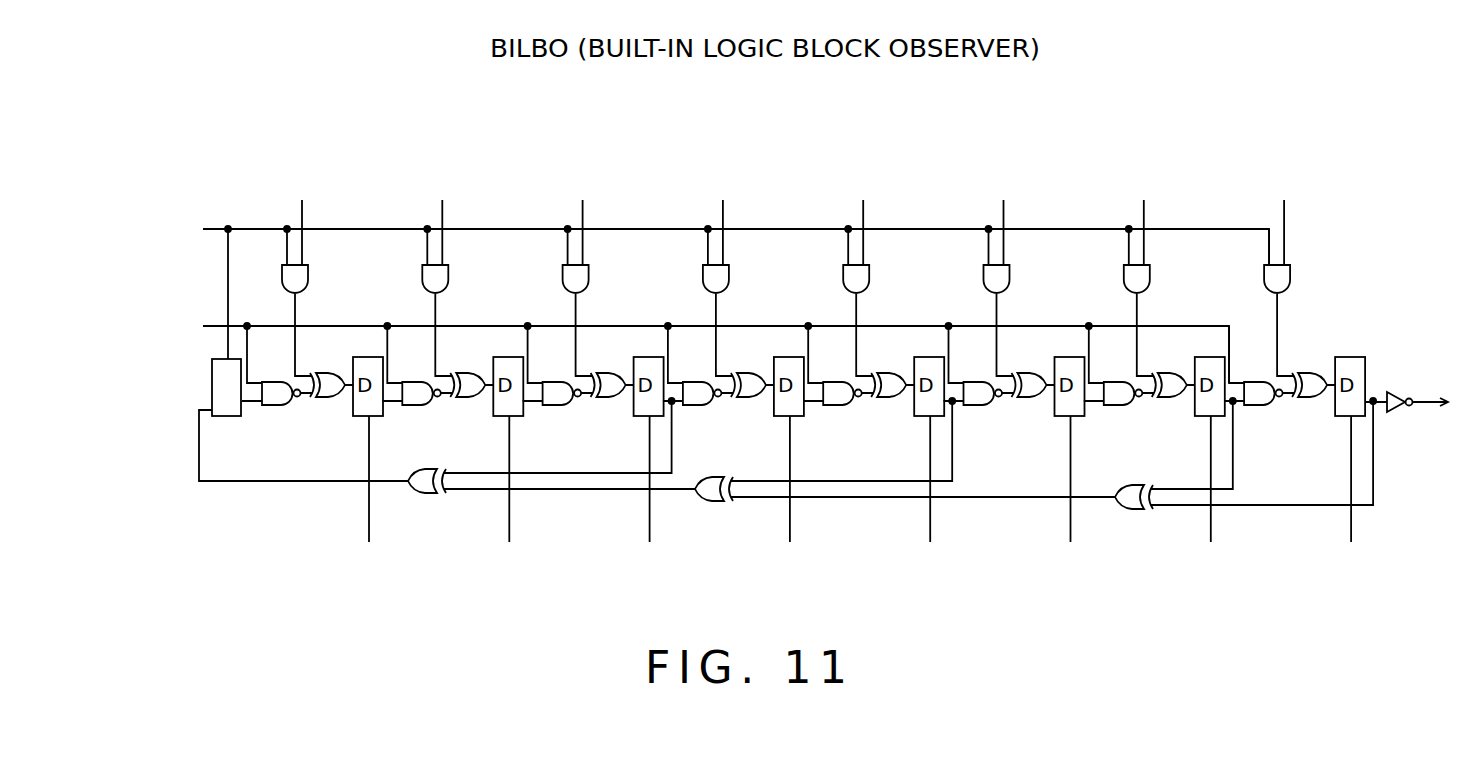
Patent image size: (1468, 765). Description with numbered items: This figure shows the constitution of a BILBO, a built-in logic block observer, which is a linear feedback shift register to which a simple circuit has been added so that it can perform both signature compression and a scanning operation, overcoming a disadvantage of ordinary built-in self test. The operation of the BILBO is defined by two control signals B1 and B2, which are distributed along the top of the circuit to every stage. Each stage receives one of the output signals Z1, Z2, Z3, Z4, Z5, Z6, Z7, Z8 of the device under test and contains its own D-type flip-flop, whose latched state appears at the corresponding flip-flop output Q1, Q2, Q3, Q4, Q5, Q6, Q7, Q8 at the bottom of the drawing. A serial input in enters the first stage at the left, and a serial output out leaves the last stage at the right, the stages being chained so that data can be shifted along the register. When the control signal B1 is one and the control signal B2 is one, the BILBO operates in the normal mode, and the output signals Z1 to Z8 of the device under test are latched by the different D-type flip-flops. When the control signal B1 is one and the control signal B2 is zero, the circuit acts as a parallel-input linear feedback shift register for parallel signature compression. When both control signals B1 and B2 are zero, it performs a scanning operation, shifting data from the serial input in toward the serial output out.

The control signal B1 is at (715, 241).
The control signal B2 is at (695, 348).
The serial input in is at (212, 372).
The serial output out is at (1465, 382).
The output signal of the DUT Z1 is at (298, 273).
The output signal of the DUT Z2 is at (438, 273).
The output signal of the DUT Z3 is at (579, 273).
The output signal of the DUT Z4 is at (719, 273).
The output signal of the DUT Z5 is at (859, 273).
The output signal of the DUT Z6 is at (1000, 273).
The output signal of the DUT Z7 is at (1140, 273).
The output signal of the DUT Z8 is at (1280, 273).
The flip-flop output Q1 is at (361, 450).
The flip-flop output Q2 is at (501, 450).
The flip-flop output Q3 is at (642, 450).
The flip-flop output Q4 is at (782, 450).
The flip-flop output Q5 is at (922, 450).
The flip-flop output Q6 is at (1063, 450).
The flip-flop output Q7 is at (1203, 450).
The flip-flop output Q8 is at (1343, 450).